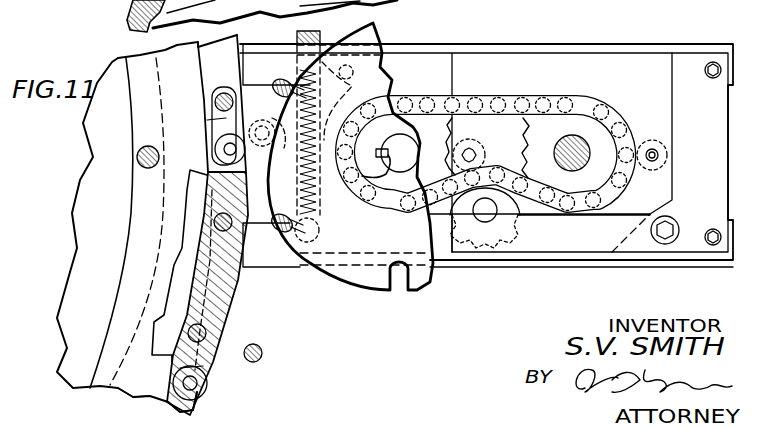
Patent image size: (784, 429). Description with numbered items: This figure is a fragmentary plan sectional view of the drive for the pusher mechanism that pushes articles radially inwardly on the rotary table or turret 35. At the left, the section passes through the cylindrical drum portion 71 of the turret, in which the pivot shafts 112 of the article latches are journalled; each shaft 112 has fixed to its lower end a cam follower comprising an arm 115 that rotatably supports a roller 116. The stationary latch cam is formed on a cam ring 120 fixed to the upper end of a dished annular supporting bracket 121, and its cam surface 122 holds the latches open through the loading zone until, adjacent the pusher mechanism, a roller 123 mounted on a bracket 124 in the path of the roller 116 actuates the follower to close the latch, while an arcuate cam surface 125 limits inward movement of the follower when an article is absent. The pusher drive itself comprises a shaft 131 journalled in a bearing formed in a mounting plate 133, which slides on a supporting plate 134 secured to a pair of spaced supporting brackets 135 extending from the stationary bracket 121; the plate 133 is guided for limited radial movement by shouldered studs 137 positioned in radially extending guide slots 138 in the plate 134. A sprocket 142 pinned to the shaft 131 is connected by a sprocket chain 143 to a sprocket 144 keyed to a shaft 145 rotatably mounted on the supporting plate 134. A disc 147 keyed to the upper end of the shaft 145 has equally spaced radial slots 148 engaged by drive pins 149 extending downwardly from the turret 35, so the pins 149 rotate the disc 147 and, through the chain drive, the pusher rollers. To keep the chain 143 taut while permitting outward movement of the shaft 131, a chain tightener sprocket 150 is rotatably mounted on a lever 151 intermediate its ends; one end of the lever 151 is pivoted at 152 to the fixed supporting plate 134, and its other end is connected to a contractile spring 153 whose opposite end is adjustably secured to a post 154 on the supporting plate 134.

The rotary table or turret 35 is at (266, 296).
The cylindrical drum portion 71 is at (220, 225).
The pivot shaft 112 is at (217, 216).
The arm 115 is at (215, 248).
The roller 116 is at (217, 268).
The cam ring 120 is at (123, 400).
The dished annular supporting bracket 121 is at (138, 223).
The cam surface 122 is at (166, 410).
The roller 123 is at (284, 143).
The bracket 124 is at (263, 118).
The arcuate cam surface 125 is at (199, 111).
The shaft 131 is at (601, 134).
The mounting plate 133 is at (562, 35).
The supporting plate 134 is at (737, 153).
The supporting brackets 135 is at (486, 150).
The shouldered studs 137 is at (671, 143).
The guide slots 138 is at (683, 154).
The sprocket 142 is at (523, 123).
The sprocket chain 143 is at (497, 115).
The sprocket 144 is at (486, 139).
The shaft 145 is at (369, 171).
The disc 147 is at (350, 151).
The slots 148 is at (376, 263).
The drive pins 149 is at (283, 208).
The chain tightener sprocket 150 is at (488, 237).
The lever 151 is at (601, 250).
The pivot 152 is at (661, 251).
The contractile spring 153 is at (338, 123).
The post 154 is at (353, 101).